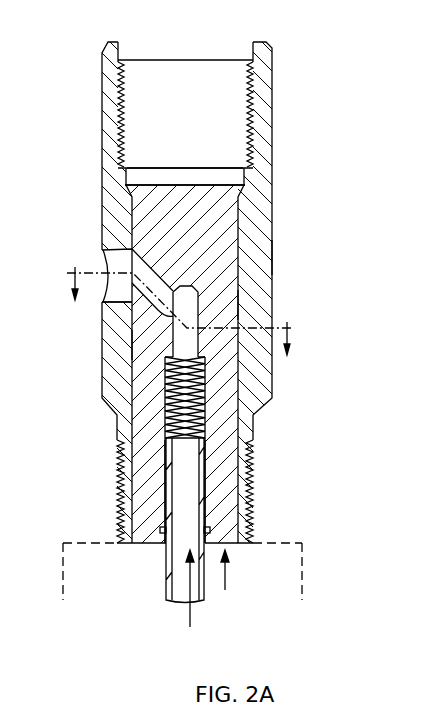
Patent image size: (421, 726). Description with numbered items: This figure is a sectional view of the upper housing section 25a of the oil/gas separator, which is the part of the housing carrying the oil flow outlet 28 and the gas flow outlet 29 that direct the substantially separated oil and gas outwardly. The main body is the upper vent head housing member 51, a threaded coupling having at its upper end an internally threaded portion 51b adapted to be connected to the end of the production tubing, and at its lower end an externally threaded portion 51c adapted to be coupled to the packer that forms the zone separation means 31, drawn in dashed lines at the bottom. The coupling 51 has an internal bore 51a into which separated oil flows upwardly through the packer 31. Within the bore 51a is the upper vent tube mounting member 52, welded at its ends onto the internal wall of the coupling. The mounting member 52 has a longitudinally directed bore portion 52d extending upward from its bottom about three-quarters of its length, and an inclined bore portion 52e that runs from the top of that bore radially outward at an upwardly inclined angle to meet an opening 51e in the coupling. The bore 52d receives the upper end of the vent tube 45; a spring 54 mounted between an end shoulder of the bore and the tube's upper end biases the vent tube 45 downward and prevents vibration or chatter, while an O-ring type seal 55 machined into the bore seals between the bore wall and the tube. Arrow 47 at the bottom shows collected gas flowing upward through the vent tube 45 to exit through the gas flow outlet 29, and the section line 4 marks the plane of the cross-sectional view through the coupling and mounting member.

The upper vent head housing member 51 is at (263, 158).
The central bore 51a is at (238, 305).
The internally threaded portion 51b is at (247, 90).
The externally threaded portion 51c is at (253, 477).
The opening 51e is at (104, 303).
The upper vent tube mounting member 52 is at (227, 227).
The longitudinally directed bore portion 52d is at (205, 482).
The inclined bore portion 52e is at (134, 347).
The oil flow outlet 28 is at (153, 176).
The gas flow outlet 29 is at (102, 253).
The upper housing section 25a is at (278, 256).
The spring 54 is at (168, 420).
The O-ring type seal 55 is at (162, 531).
The vent tube 45 is at (165, 590).
The arrow 47 is at (190, 627).
The zone separation means 31 is at (304, 587).
The section line 4- 4 is at (183, 311).